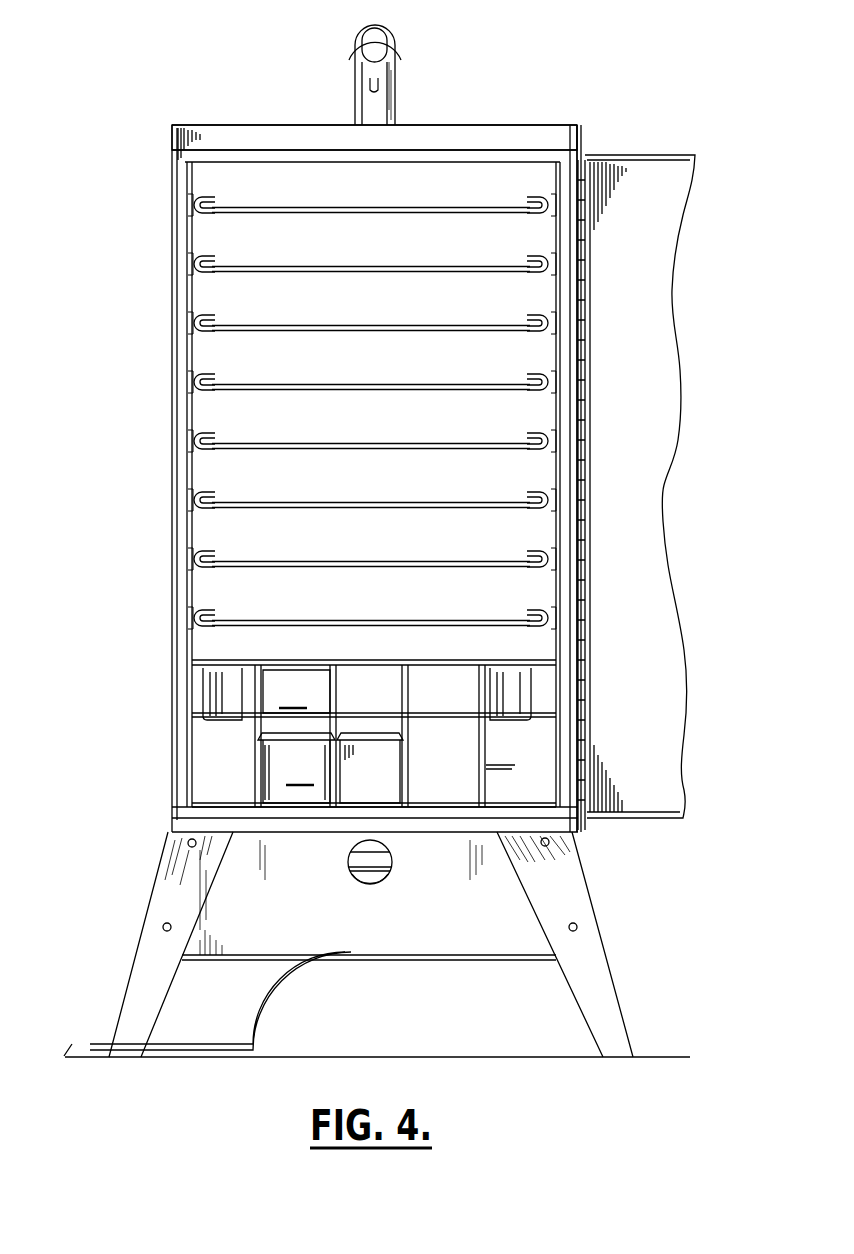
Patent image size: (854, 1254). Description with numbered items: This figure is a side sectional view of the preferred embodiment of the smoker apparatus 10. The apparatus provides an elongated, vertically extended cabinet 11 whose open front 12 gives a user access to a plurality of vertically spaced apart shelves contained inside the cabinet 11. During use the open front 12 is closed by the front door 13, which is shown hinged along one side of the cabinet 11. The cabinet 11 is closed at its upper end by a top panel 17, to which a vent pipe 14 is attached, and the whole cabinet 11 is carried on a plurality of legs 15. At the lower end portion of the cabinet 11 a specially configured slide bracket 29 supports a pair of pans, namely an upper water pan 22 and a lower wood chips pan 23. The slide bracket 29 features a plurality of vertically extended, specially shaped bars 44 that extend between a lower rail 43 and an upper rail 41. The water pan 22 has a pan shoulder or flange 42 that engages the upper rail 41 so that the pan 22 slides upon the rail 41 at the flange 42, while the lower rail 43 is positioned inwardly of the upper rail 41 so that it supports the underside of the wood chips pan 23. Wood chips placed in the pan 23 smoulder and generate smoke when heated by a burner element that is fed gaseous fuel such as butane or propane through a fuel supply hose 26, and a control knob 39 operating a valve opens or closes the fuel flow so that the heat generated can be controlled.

The smoker apparatus 10 is at (229, 107).
The cabinet 11 is at (578, 122).
The open front 12 is at (252, 533).
The front door 13 is at (672, 292).
The vent pipe 14 is at (394, 97).
The legs 15 is at (140, 980).
The top panel 17 is at (305, 122).
The water pan 22 is at (296, 691).
The wood chips pan 23 is at (296, 768).
The fuel supply hose 26 is at (325, 1020).
The slide bracket 29 is at (340, 668).
The control knob 39 is at (363, 886).
The upper rail 41 is at (200, 683).
The pan shoulder or flange 42 is at (195, 656).
The lower rail 43 is at (213, 800).
The bars 44 is at (258, 738).